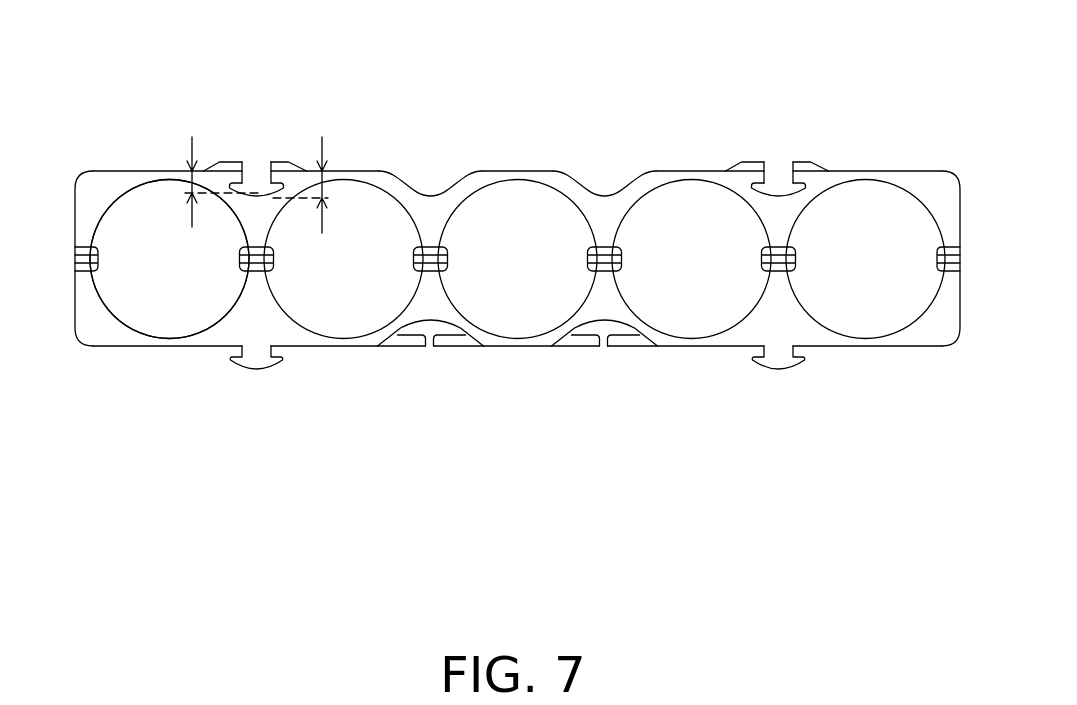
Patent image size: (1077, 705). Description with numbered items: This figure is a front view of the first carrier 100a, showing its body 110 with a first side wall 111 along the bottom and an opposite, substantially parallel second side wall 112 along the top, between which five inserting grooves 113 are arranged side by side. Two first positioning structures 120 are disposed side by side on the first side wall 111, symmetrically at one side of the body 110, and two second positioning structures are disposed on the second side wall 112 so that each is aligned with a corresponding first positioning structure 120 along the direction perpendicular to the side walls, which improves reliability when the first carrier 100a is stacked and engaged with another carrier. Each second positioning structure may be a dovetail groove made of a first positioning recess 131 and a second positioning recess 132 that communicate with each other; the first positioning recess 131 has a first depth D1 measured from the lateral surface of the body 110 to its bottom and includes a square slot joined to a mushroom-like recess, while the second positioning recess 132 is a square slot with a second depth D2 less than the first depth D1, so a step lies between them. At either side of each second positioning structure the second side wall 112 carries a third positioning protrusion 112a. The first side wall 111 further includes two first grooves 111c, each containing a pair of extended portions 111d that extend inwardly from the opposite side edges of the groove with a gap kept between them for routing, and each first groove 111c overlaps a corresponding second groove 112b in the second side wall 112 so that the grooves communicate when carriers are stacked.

The first carrier 100a is at (523, 288).
The body 110 is at (960, 221).
The first side wall 111 is at (169, 354).
The first groove 111c is at (405, 336).
The extended portion 111d is at (444, 348).
The second side wall 112 is at (909, 166).
The third positioning protrusion 112a is at (745, 164).
The second groove 112b is at (424, 166).
The inserting groove 113 is at (134, 309).
The first positioning structure 120 is at (252, 375).
The first positioning recess 131 is at (758, 181).
The second positioning recess 132 is at (779, 168).
The first depth D1 is at (350, 187).
The second depth D2 is at (178, 188).